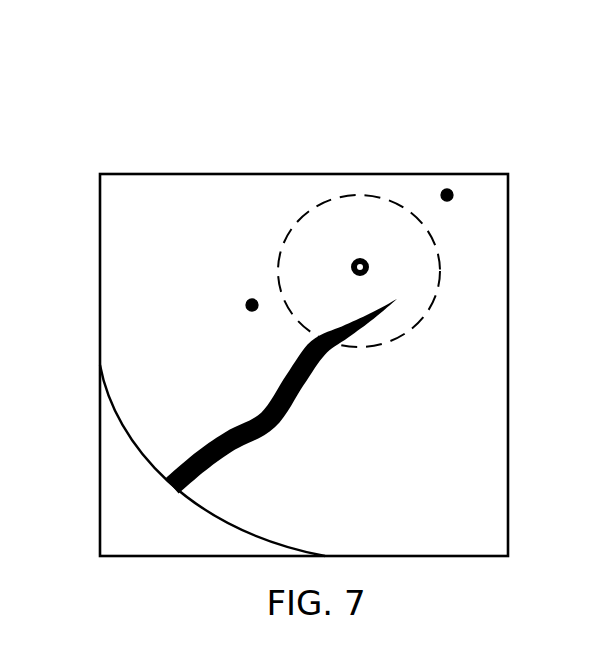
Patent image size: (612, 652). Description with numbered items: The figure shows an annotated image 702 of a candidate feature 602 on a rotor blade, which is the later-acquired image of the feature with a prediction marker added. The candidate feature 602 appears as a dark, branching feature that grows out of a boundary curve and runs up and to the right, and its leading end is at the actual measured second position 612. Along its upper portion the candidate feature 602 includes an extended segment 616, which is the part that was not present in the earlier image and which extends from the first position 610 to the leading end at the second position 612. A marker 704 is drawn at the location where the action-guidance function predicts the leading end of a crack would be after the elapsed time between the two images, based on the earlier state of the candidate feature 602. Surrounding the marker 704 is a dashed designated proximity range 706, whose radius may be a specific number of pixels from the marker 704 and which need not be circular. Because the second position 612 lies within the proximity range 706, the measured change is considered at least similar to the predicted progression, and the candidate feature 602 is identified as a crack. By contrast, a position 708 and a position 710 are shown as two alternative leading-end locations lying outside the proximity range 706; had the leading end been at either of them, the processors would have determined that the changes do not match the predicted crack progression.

The annotated image 702 is at (467, 71).
The candidate feature 602 is at (205, 441).
The first position 610 is at (289, 364).
The second position 612 is at (410, 296).
The extended segment 616 is at (360, 334).
The designated proximity range 706 is at (287, 225).
The marker 704 is at (358, 258).
The position 708 is at (240, 295).
The position 710 is at (447, 180).